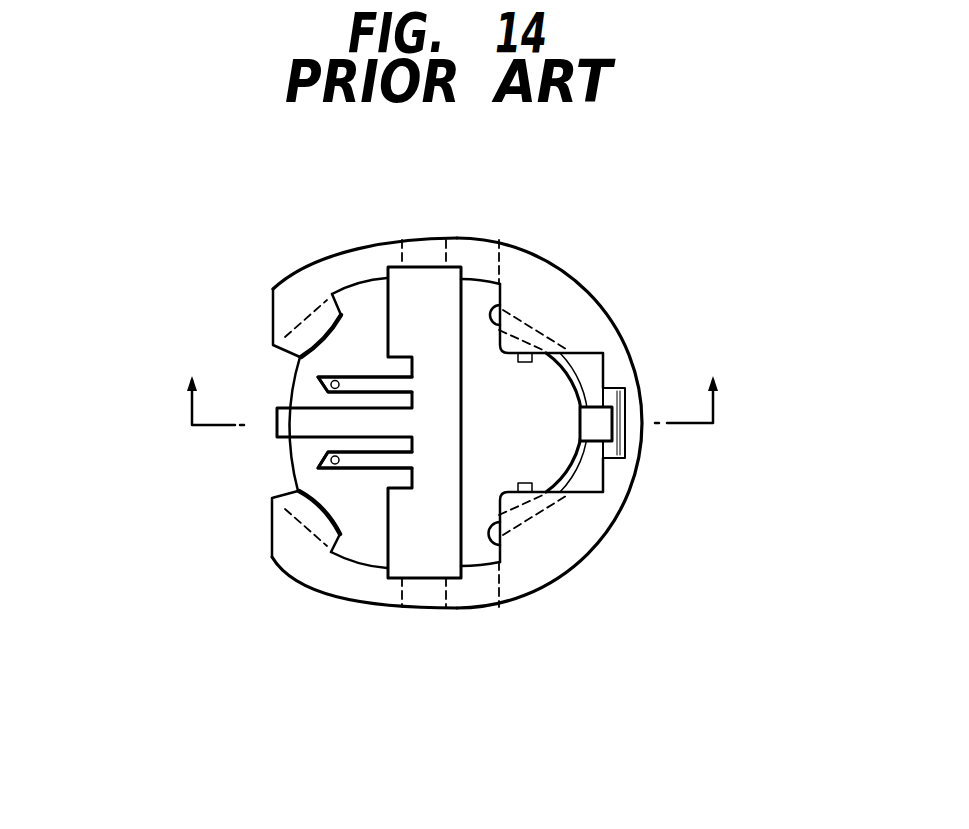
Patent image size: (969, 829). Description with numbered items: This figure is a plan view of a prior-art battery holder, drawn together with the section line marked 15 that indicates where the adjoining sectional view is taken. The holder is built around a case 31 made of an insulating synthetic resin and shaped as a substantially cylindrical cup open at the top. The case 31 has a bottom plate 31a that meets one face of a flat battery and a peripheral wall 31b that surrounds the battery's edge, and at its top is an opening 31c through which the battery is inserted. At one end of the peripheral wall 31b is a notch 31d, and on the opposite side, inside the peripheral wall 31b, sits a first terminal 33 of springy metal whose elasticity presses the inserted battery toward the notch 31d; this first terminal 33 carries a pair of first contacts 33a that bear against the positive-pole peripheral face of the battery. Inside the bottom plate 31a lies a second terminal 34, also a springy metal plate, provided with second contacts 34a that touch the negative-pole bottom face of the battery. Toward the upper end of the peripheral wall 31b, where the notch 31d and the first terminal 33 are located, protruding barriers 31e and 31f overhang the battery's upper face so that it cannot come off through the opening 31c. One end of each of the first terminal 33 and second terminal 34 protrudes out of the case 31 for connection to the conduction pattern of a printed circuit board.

The case 31 is at (630, 504).
The bottom plate 31a is at (363, 538).
The peripheral wall 31b is at (365, 263).
The opening 31c is at (492, 452).
The notch 31d is at (275, 462).
The protruding barrier 31e is at (313, 328).
The protruding barrier 31f is at (513, 347).
The first terminal 33 is at (590, 427).
The first contacts 33a is at (507, 307).
The second terminal 34 is at (436, 327).
The second contacts 34a is at (330, 381).
The section line for FIG. 15 is at (454, 378).